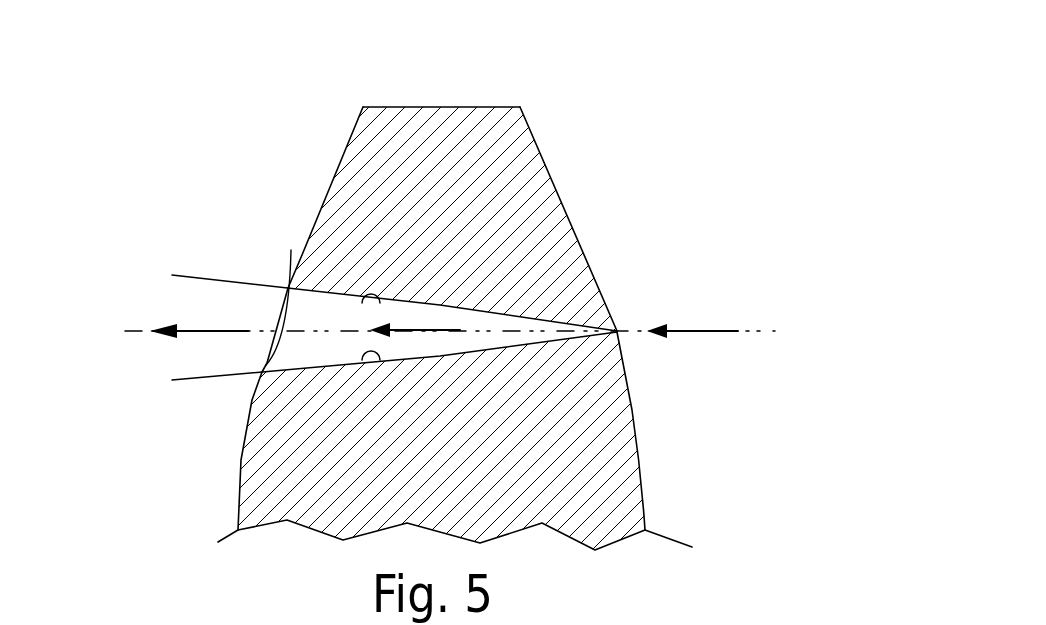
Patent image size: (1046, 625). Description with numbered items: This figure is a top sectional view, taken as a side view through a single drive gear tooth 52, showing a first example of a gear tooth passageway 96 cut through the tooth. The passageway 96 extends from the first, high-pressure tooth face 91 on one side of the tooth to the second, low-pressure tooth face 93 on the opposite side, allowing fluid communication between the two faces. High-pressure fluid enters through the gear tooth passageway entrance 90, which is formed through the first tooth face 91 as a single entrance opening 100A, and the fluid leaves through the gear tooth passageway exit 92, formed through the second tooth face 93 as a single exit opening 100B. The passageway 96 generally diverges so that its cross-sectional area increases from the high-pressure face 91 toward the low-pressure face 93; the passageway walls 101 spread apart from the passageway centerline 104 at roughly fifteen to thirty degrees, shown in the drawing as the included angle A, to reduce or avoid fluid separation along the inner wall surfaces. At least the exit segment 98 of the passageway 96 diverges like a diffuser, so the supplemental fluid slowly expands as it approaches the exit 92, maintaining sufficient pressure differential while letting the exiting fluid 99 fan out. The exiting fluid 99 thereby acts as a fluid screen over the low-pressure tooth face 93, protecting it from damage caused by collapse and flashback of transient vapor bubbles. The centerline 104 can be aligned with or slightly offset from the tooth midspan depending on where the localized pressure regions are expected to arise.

The drive gear tooth 52 is at (523, 310).
The gear tooth passageway entrance 90 is at (636, 348).
The first/high-pressure tooth face 91 is at (573, 227).
The gear tooth passageway exit 92 is at (266, 304).
The second/low-pressure tooth face 93 is at (327, 195).
The gear tooth passageway 96 is at (513, 298).
The exit segment 98 is at (347, 320).
The exiting fluid 99 is at (187, 380).
The single entrance opening 100A is at (618, 328).
The single exit opening 100B is at (266, 362).
The passageway walls 101 is at (380, 303).
The passageway centerline 104 is at (762, 333).
The notch angle A is at (297, 315).